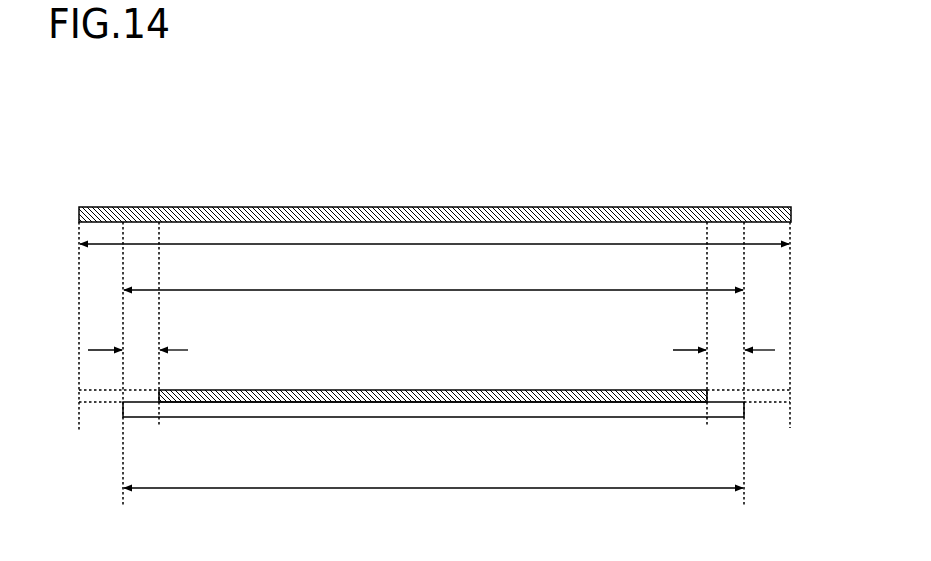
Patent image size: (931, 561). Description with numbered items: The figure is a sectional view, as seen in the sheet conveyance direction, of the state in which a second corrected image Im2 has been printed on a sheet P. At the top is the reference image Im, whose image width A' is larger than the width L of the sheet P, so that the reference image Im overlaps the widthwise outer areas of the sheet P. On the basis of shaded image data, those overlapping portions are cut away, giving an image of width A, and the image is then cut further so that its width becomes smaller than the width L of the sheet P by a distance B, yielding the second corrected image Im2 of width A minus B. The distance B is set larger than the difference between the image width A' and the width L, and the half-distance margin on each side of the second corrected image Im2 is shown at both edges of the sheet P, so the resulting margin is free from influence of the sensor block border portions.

The reference image Im is at (315, 207).
The second corrected image Im2 is at (318, 390).
The sheet P is at (388, 418).
The image width of the reference image A' is at (434, 261).
The image width A is at (433, 310).
The width of the sheet L is at (433, 505).